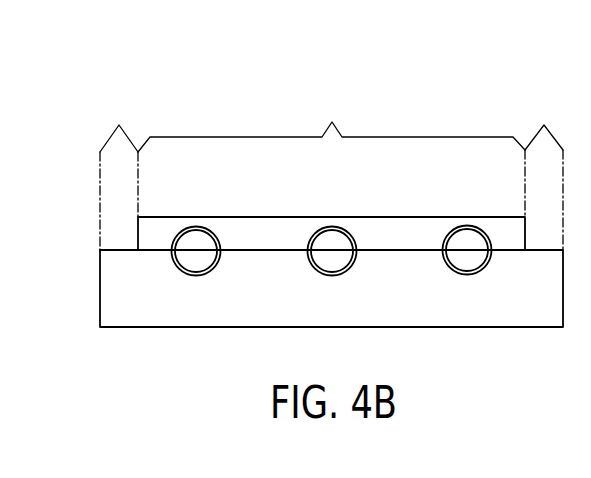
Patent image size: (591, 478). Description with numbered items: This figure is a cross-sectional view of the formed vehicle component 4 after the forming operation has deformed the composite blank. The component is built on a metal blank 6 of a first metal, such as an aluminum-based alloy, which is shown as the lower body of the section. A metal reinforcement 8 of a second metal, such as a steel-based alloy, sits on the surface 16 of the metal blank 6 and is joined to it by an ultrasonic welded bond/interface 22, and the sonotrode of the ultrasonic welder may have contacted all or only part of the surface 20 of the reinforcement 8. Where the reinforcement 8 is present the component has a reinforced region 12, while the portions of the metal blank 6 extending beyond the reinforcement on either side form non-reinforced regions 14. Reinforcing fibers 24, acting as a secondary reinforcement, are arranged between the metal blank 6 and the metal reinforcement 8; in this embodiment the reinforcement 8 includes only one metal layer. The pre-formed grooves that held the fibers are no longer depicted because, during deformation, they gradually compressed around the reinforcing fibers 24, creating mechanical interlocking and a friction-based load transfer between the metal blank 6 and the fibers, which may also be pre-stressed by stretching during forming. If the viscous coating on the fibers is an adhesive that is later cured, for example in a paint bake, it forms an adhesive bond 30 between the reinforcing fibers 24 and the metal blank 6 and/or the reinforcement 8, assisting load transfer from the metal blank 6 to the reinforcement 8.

The vehicle component 4 is at (515, 82).
The metal blank 6 is at (188, 310).
The reinforcement 8 is at (278, 230).
The reinforced region 12 is at (331, 125).
The non-reinforced region 14 is at (331, 174).
The surface 16 is at (124, 242).
The surface 20 is at (407, 212).
The ultrasonic welded bond/interface 22 is at (258, 258).
The reinforcing fibers 24 is at (190, 242).
The adhesive bond 30 is at (354, 263).